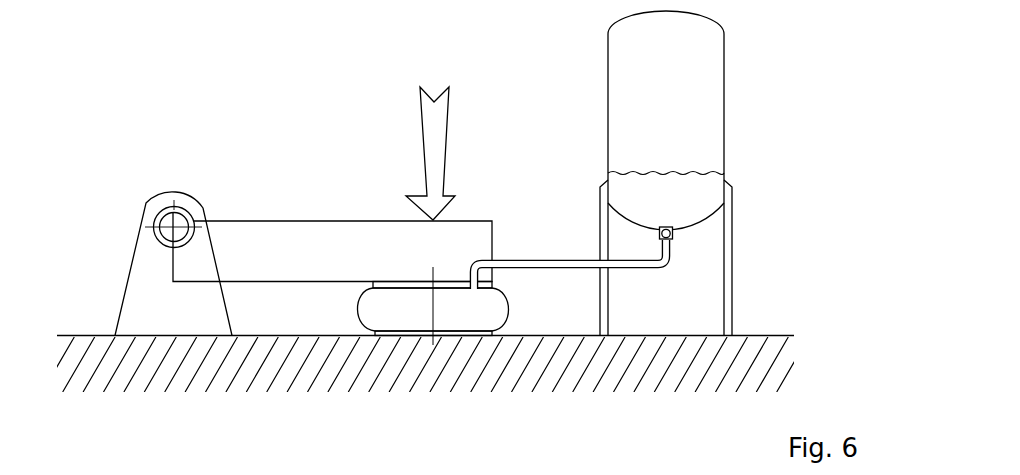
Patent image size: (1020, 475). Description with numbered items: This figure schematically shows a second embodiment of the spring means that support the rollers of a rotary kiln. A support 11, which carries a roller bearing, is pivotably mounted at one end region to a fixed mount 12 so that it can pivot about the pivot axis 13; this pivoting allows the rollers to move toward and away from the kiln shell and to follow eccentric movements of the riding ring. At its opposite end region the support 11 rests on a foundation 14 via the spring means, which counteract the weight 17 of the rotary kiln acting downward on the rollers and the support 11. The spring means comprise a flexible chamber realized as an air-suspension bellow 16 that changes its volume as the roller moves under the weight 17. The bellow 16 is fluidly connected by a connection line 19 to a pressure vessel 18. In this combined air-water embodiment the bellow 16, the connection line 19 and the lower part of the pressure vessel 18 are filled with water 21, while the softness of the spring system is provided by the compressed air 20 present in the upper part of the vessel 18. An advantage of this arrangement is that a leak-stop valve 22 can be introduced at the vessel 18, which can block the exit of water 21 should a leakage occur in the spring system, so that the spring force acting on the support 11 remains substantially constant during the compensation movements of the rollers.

The support 11 is at (300, 230).
The fixed mount 12 is at (132, 309).
The pivot axis 13 is at (178, 222).
The foundation 14 is at (272, 373).
The air-suspension bellow 16 is at (469, 312).
The weight 17 is at (440, 112).
The pressure vessel 18 is at (725, 73).
The fluid line 19 is at (555, 260).
The compressed air 20 is at (690, 117).
The water 21 is at (698, 197).
The leak-stop valve 22 is at (672, 235).